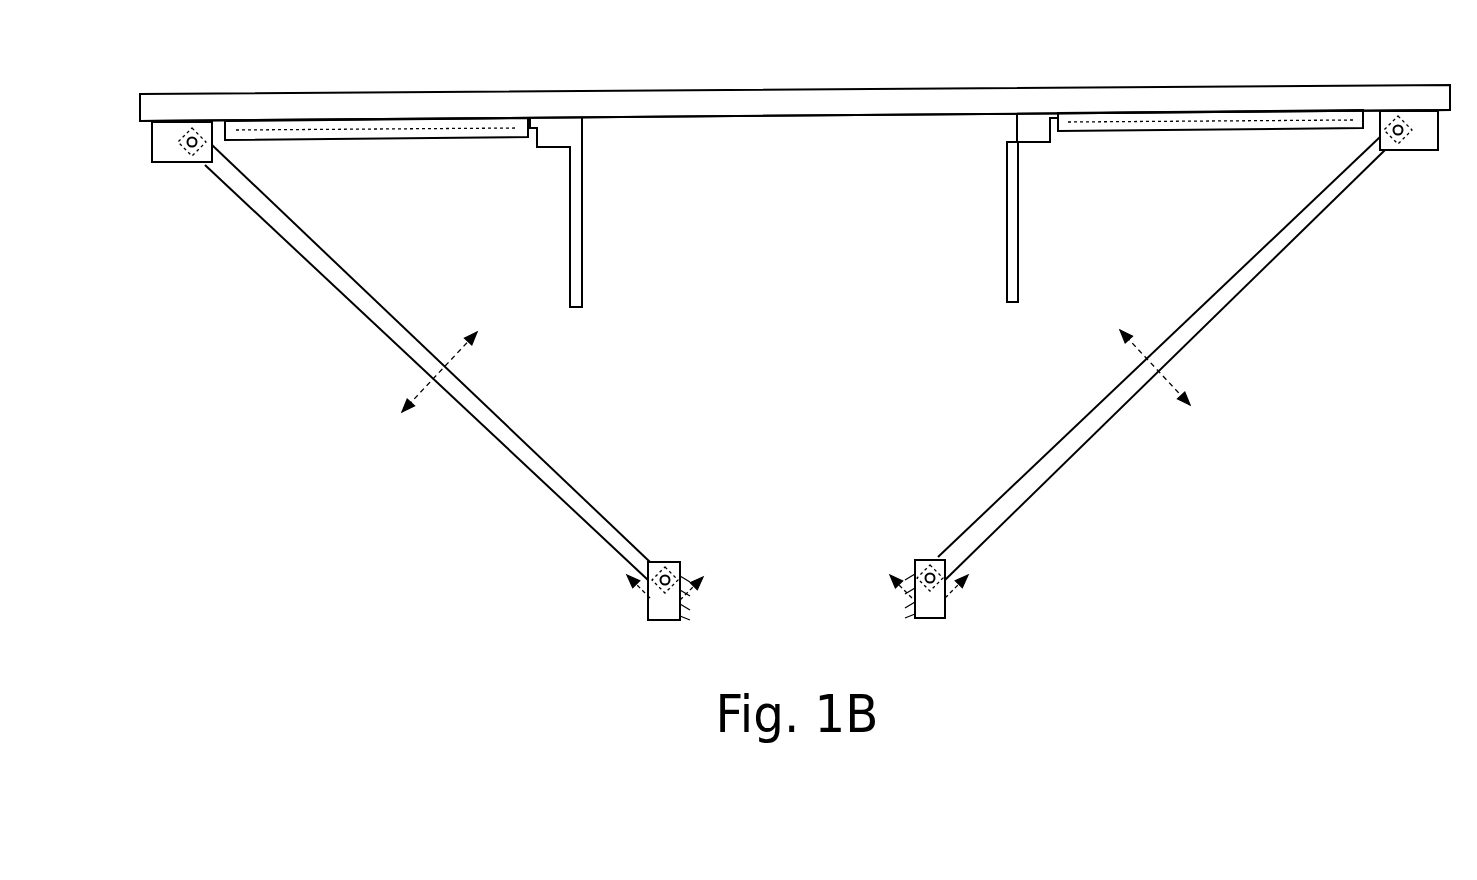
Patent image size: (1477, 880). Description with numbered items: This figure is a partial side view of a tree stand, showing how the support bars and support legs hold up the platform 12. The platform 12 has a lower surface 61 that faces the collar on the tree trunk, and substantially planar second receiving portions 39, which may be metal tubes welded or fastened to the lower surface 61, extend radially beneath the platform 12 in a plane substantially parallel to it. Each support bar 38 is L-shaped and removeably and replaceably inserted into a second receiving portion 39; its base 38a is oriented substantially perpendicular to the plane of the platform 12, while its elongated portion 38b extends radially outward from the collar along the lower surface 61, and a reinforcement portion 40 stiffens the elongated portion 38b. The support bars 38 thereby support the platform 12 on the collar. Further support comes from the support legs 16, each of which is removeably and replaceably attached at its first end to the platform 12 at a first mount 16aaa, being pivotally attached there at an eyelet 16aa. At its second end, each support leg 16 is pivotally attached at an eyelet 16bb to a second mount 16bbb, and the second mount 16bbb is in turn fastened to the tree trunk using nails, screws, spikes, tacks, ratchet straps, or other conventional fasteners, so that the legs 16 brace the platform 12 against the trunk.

The platform 12 is at (990, 87).
The lower surface 61 is at (754, 116).
The second receiving portions 39 is at (366, 142).
The support bar 38 is at (521, 186).
The base 38a is at (1020, 250).
The elongated portion 38b is at (1178, 132).
The reinforcement portion 40 is at (1052, 140).
The support leg 16 is at (1228, 312).
The eyelet 16aa is at (1401, 125).
The first mount 16aaa is at (180, 165).
The eyelet 16bb is at (927, 572).
The second mount 16bbb is at (670, 560).